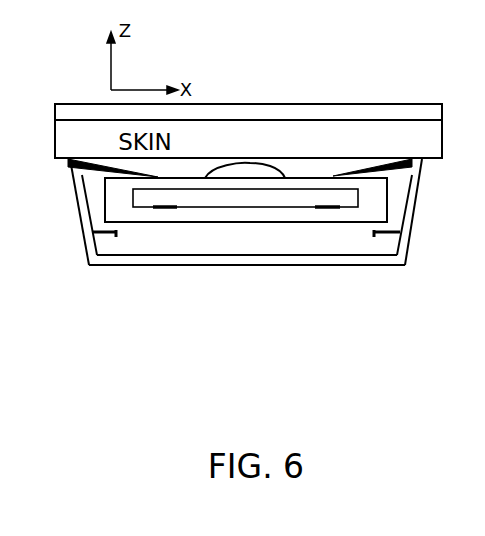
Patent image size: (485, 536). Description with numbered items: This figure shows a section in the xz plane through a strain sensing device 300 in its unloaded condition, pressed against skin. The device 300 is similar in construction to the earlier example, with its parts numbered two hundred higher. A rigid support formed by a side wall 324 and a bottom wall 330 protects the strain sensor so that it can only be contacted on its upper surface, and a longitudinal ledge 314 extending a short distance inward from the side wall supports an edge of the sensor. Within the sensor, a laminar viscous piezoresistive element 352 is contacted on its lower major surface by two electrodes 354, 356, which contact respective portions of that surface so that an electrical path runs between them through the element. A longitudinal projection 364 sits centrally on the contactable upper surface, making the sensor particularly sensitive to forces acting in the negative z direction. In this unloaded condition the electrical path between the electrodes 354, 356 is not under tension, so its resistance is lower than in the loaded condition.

The strain sensing device 300 is at (70, 358).
The longitudinal ledge 314 is at (108, 238).
The side wall 324 is at (75, 217).
The bottom wall 330 is at (368, 266).
The viscous piezoresistive element 352 is at (248, 200).
The first electrode 354 is at (160, 210).
The second electrode 356 is at (328, 210).
The longitudinal projection 364 is at (248, 173).